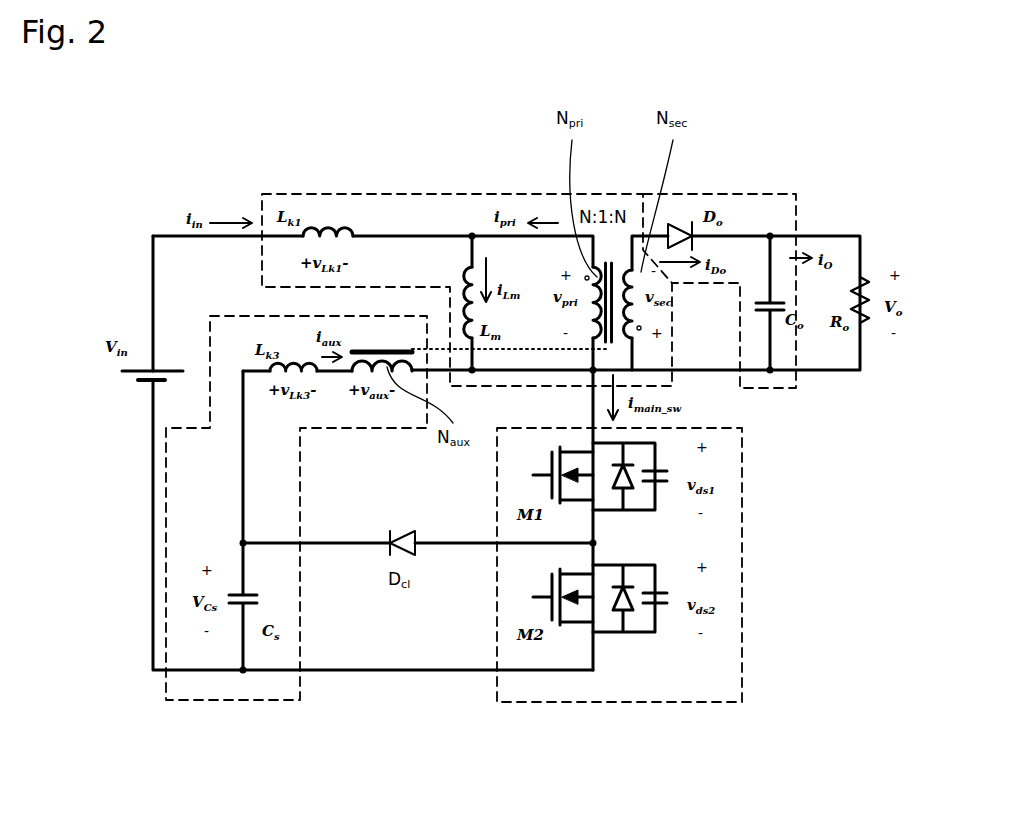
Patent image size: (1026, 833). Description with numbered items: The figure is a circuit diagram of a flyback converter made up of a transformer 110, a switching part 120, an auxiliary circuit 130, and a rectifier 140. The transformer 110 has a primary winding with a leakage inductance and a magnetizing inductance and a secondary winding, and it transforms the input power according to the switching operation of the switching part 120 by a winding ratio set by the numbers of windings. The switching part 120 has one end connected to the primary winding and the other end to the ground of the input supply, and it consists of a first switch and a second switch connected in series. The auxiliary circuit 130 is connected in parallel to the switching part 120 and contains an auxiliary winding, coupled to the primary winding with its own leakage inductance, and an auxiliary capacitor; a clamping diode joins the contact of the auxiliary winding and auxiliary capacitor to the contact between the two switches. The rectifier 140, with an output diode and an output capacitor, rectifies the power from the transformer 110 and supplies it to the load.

The transformer 110 is at (380, 193).
The switching part 120 is at (640, 705).
The auxiliary circuit 130 is at (250, 703).
The rectifier 140 is at (763, 193).